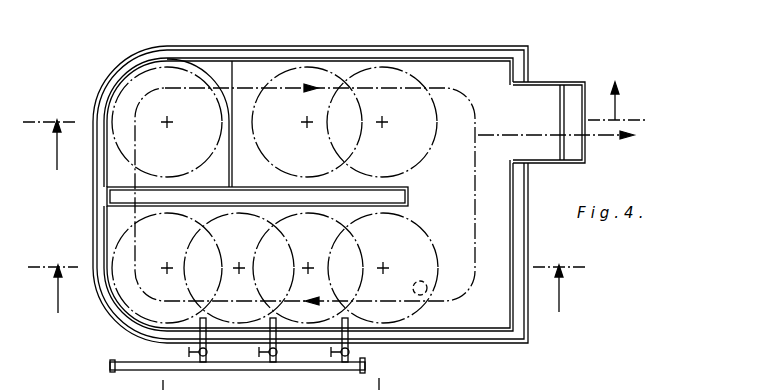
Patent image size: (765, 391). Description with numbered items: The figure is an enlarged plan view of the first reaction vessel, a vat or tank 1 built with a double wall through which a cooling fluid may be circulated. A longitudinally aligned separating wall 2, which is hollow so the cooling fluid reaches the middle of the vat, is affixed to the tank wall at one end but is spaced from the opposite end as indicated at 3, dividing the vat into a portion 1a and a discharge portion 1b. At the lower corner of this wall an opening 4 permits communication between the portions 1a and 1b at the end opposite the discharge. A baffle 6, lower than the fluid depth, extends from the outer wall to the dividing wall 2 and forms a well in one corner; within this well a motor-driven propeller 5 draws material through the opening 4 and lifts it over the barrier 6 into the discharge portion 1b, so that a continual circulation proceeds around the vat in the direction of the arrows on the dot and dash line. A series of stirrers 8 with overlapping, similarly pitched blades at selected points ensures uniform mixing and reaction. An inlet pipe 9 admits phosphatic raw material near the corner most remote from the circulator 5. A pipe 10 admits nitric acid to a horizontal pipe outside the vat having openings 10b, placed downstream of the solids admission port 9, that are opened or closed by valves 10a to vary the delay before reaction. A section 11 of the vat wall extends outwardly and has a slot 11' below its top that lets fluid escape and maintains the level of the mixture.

The vat or tank 1 is at (112, 318).
The portion of the tank 1a is at (460, 313).
The discharge portion of the tank 1b is at (468, 72).
The separating wall 2 is at (410, 196).
The space at end of separating wall 3 is at (465, 214).
The opening 4 is at (230, 203).
The propeller 5 is at (130, 82).
The baffle or barrier 6 is at (240, 160).
The stirrers 8 is at (305, 124).
The inlet pipe 9 is at (428, 290).
The nitric acid pipe 10 is at (133, 366).
The valves 10a is at (196, 356).
The openings 10b is at (215, 323).
The outwardly extending wall section 11 is at (549, 109).
The slot 11' is at (588, 107).